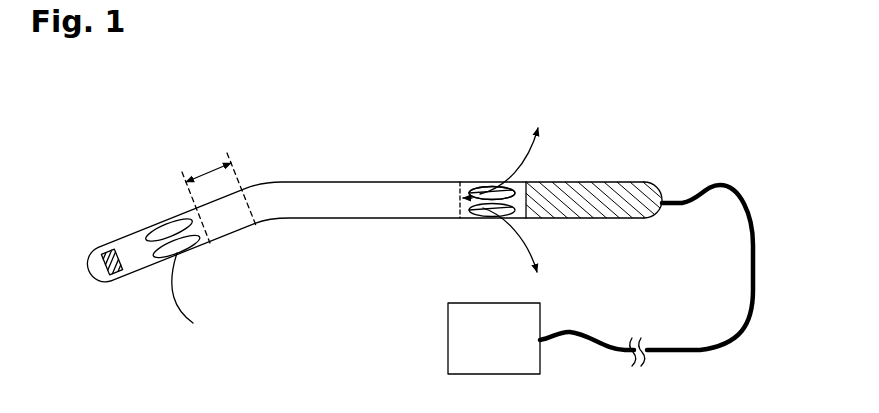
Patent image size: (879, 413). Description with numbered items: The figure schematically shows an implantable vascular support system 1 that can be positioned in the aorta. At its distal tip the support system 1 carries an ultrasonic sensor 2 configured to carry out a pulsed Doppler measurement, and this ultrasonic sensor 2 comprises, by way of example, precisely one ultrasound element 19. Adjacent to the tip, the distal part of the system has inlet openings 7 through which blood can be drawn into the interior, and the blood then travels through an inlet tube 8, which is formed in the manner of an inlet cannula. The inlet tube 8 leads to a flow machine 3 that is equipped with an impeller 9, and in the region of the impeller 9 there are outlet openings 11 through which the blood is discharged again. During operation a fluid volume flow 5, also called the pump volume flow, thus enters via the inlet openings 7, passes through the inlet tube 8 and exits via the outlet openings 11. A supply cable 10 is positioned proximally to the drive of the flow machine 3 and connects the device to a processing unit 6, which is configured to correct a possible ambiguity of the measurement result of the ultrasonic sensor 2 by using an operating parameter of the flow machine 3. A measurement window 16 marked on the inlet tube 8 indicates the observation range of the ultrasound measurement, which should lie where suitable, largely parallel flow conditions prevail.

The implantable vascular support system 1 is at (653, 123).
The ultrasonic sensor 2 is at (110, 268).
The flow machine 3 is at (578, 207).
The fluid volume flow 5 is at (167, 228).
The processing unit 6 is at (458, 341).
The inlet openings 7 is at (180, 251).
The inlet tube 8 is at (350, 198).
The impeller 9 is at (483, 190).
The supply cable 10 is at (718, 193).
The outlet openings 11 is at (483, 215).
The measurement window 16 is at (213, 172).
The ultrasound element 19 is at (92, 270).